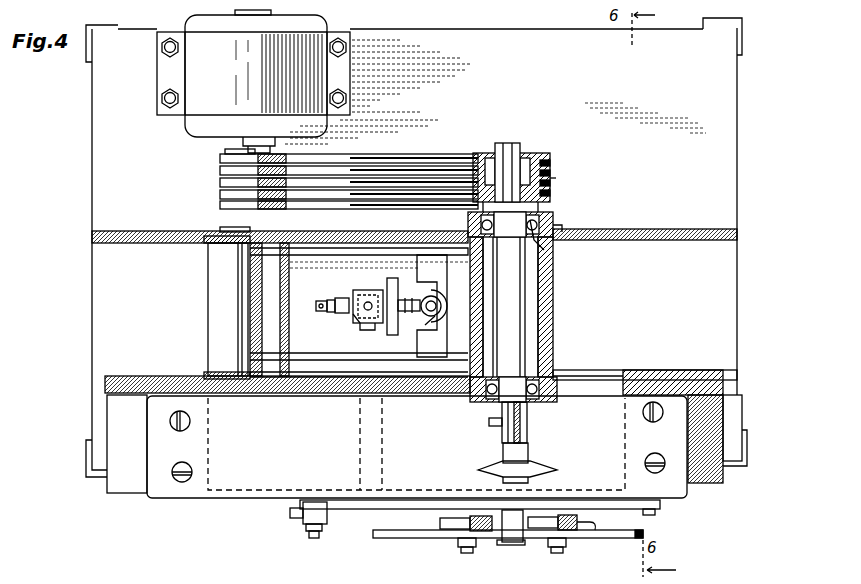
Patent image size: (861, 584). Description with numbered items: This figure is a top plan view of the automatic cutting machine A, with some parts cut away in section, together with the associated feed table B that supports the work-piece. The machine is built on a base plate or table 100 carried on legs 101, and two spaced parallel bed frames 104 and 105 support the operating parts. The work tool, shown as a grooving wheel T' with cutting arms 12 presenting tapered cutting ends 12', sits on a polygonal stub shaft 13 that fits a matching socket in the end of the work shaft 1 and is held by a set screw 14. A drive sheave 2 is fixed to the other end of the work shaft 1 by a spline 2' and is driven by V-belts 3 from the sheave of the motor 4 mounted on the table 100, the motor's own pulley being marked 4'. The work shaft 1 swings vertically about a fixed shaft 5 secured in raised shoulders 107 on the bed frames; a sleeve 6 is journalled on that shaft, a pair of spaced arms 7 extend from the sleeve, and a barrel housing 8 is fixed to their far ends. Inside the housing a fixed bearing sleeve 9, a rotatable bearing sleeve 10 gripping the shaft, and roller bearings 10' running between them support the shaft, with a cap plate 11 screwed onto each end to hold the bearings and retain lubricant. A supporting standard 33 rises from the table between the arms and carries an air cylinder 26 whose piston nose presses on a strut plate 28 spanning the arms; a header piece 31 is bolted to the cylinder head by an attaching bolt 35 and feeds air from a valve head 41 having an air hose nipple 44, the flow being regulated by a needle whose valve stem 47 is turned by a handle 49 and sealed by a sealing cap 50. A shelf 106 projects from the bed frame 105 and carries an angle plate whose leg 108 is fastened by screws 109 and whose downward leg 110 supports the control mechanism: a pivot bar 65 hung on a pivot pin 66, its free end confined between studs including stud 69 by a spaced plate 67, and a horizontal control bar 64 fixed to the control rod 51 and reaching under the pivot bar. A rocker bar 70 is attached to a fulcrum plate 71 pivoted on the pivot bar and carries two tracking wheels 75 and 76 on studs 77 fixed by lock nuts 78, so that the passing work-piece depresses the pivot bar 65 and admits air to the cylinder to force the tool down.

The work shaft 1 is at (512, 320).
The drive pulley or sheave 2 is at (511, 161).
The spline 2' is at (507, 161).
The V-belts 3 is at (378, 168).
The motor 4 is at (253, 81).
The motor pulley 4' is at (218, 156).
The fixed shaft 5 is at (222, 228).
The sleeve 6 is at (208, 291).
The spaced arms 7 is at (278, 268).
The barrel housing 8 is at (553, 292).
The fixed bearing sleeve 9 is at (562, 228).
The rotatable bearing sleeve 10 is at (568, 255).
The roller bearings 10' is at (561, 287).
The cap plate 11 is at (553, 212).
The cutting arms 12 is at (536, 449).
The tapered cutting ends 12' is at (534, 465).
The stub shaft 13 is at (527, 432).
The set screw 14 is at (489, 421).
The air cylinder 26 is at (450, 320).
The strut plate 28 is at (420, 255).
The header piece 31 is at (442, 300).
The supporting standard 33 is at (392, 278).
The attaching bolt 35 is at (434, 320).
The valve head 41 is at (370, 293).
The air hose attaching nipple 44 is at (414, 300).
The valve stem 47 is at (331, 300).
The handle 49 is at (320, 301).
The sealing cap 50 is at (347, 298).
The control rod 51 is at (355, 322).
The horizontal control bar 64 is at (360, 450).
The pivot bar 65 is at (296, 505).
The pivot pin 66 is at (648, 515).
The spaced plate 67 is at (303, 516).
The stud 69 is at (307, 530).
The rocker bar 70 is at (372, 539).
The fulcrum plate 71 is at (512, 538).
The tracking wheel 75 is at (588, 530).
The tracking wheel 76 is at (440, 523).
The stud 77 is at (461, 546).
The lock nut 78 is at (470, 553).
The base plate or table 100 is at (92, 158).
The legs 101 is at (84, 62).
The bed frame 104 is at (352, 225).
The bed frame 105 is at (284, 392).
The shelf 106 is at (127, 494).
The raised shoulders 107 is at (208, 243).
The leg of angle plate 108 is at (646, 382).
The bolts or screws 109 is at (174, 433).
The downwardly projecting leg 110 is at (220, 499).
The grooving wheel T' is at (536, 483).
The automatic cutting machine A is at (749, 134).
The feed table B is at (700, 492).